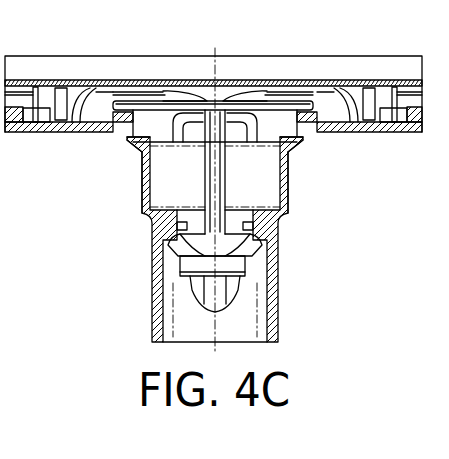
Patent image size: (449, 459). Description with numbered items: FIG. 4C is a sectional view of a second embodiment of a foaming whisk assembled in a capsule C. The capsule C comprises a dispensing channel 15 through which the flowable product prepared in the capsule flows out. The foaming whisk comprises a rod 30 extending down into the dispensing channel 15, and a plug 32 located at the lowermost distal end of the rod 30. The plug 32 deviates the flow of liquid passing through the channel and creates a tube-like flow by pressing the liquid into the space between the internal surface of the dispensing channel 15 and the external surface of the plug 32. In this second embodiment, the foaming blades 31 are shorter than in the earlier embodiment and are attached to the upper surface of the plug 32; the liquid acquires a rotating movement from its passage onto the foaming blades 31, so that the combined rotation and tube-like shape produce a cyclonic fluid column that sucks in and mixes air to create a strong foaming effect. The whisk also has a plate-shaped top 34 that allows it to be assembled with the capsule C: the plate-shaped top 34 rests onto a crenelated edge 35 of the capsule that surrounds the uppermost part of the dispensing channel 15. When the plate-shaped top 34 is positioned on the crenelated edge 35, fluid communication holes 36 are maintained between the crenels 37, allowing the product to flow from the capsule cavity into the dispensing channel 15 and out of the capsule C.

The dispensing channel 15 is at (212, 226).
The rod 30 is at (217, 173).
The foaming blades 31 is at (193, 240).
The plug 32 is at (240, 270).
The plate-shaped top 34 is at (222, 100).
The crenelated edge 35 is at (111, 148).
The fluid communication holes 36 is at (138, 148).
The crenels 37 is at (105, 132).
The capsule C is at (405, 148).